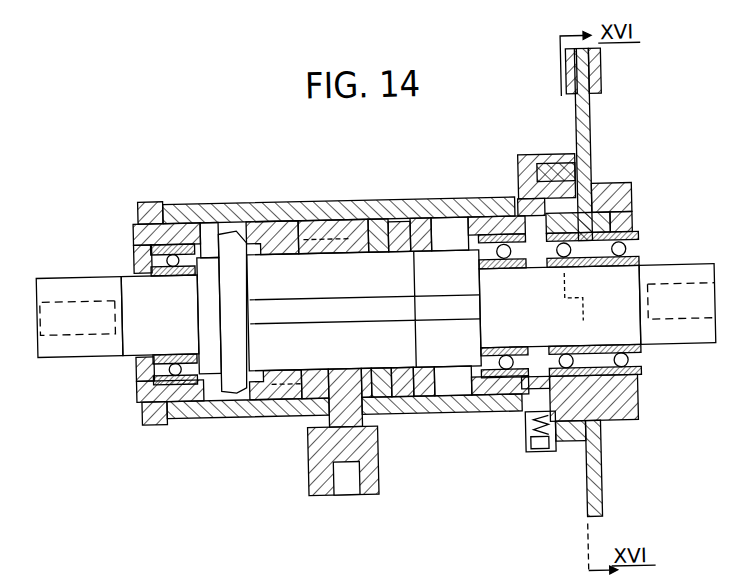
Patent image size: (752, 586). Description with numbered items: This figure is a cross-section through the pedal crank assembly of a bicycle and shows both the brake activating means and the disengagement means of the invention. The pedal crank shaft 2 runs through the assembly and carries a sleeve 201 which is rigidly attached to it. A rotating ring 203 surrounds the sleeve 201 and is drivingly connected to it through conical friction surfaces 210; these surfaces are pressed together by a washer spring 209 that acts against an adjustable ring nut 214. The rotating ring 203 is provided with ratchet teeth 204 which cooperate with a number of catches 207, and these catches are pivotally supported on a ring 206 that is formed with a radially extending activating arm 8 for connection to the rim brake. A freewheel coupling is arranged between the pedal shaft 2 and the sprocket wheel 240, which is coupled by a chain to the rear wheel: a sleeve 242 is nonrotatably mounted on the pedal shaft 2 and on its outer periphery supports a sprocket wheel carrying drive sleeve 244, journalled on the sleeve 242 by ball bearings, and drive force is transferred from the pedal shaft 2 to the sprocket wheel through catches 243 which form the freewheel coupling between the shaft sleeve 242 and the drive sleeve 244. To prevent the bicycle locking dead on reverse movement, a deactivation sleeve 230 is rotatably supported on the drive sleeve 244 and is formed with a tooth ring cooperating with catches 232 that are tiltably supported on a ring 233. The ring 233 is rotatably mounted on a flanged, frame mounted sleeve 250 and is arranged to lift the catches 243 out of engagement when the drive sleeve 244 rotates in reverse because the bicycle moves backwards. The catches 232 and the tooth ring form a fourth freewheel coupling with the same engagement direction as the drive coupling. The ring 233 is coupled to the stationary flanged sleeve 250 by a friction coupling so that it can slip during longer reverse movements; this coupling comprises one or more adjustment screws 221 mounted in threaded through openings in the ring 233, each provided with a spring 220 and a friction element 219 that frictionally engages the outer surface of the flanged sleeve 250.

The pedal crank shaft 2 is at (84, 352).
The radially extending activating arm 8 is at (307, 462).
The sleeve 201 is at (235, 232).
The rotating ring 203 is at (253, 219).
The ratchet teeth 204 is at (300, 398).
The ring 206 is at (307, 201).
The catches 207 is at (343, 200).
The washer spring 209 is at (382, 200).
The friction surfaces 210 is at (240, 220).
The adjustable ring nut 214 is at (441, 415).
The friction element 219 is at (523, 418).
The spring 220 is at (528, 447).
The adjustment screws 221 is at (538, 455).
The deactivation sleeve 230 is at (565, 152).
The catches 232 is at (521, 181).
The ring 233 is at (530, 194).
The sprocket wheel 240 is at (607, 80).
The sleeve 242 is at (630, 252).
The catches 243 is at (615, 223).
The drive sleeve 244 is at (588, 178).
The flanged frame mounted sleeve 250 is at (462, 232).